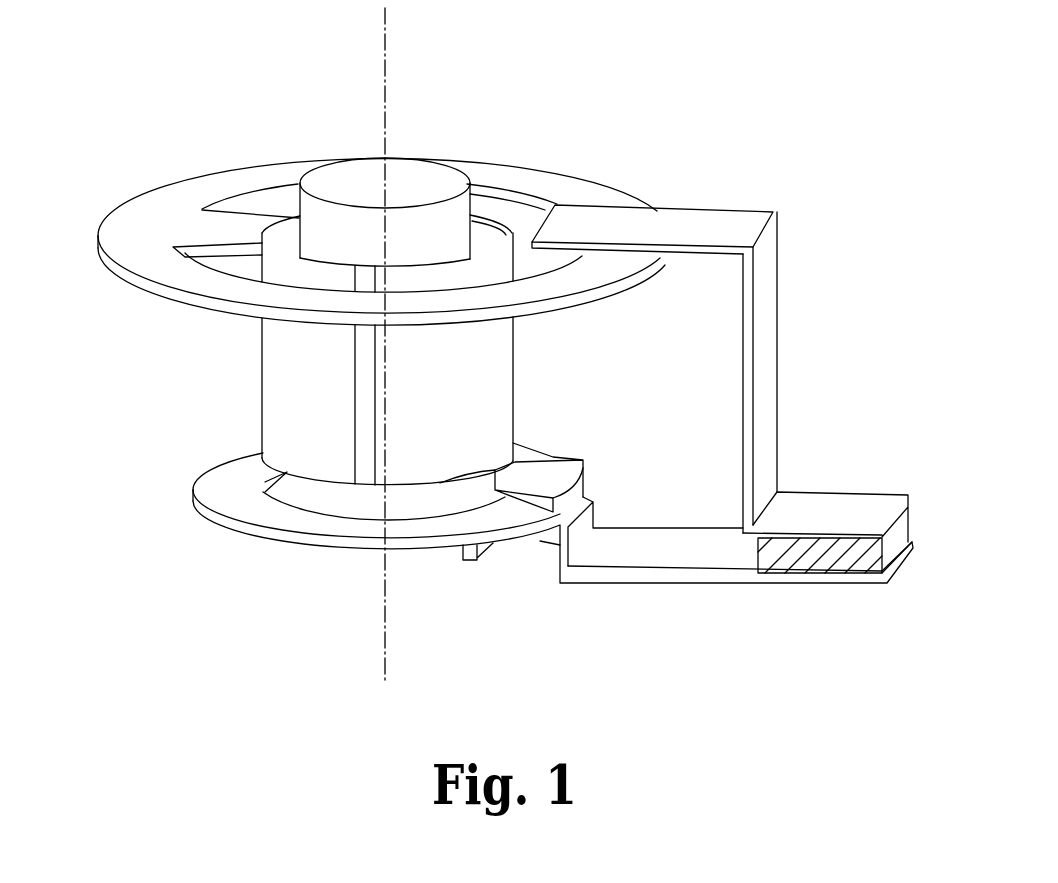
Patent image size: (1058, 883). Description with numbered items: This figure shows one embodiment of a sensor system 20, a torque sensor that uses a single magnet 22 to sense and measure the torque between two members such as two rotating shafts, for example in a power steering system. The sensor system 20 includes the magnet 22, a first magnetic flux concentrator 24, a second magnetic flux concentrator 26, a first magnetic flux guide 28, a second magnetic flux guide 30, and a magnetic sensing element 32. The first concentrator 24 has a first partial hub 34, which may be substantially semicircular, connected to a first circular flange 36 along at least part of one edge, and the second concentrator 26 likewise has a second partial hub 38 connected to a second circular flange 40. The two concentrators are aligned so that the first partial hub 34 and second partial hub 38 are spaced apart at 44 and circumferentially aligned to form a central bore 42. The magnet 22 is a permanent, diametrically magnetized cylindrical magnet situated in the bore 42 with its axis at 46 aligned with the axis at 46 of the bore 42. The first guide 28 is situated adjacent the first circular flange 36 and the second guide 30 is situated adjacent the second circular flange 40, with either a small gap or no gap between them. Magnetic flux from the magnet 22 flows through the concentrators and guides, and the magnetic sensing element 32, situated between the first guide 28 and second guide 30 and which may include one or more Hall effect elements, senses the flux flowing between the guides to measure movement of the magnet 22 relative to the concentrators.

The sensor system 20 is at (640, 108).
The magnet 22 is at (418, 172).
The first magnetic flux concentrator 24 is at (353, 198).
The second magnetic flux concentrator 26 is at (388, 565).
The first magnetic flux guide 28 is at (767, 262).
The second magnetic flux guide 30 is at (673, 548).
The magnetic sensing element 32 is at (853, 560).
The first partial hub 34 is at (353, 350).
The first circular flange 36 is at (118, 243).
The second partial hub 38 is at (467, 450).
The second circular flange 40 is at (413, 528).
The central bore 42 is at (291, 244).
The spacing between partial hubs 44 is at (357, 381).
The axis 46 is at (390, 52).